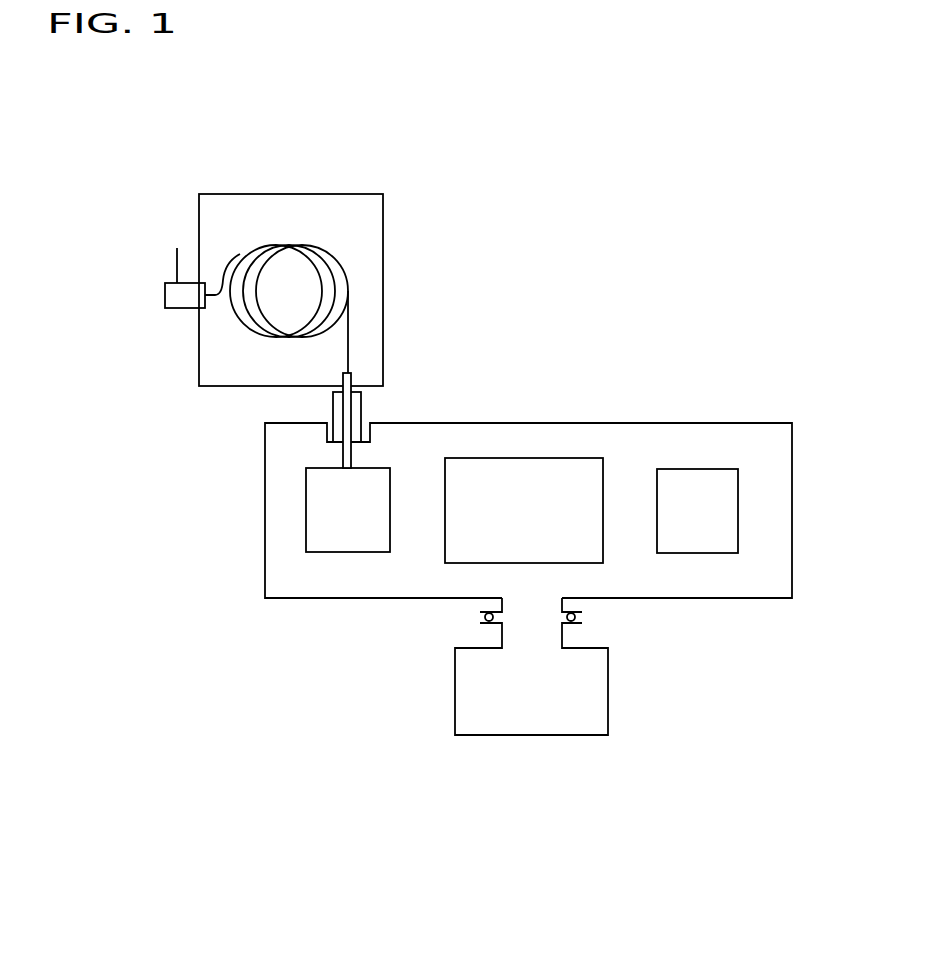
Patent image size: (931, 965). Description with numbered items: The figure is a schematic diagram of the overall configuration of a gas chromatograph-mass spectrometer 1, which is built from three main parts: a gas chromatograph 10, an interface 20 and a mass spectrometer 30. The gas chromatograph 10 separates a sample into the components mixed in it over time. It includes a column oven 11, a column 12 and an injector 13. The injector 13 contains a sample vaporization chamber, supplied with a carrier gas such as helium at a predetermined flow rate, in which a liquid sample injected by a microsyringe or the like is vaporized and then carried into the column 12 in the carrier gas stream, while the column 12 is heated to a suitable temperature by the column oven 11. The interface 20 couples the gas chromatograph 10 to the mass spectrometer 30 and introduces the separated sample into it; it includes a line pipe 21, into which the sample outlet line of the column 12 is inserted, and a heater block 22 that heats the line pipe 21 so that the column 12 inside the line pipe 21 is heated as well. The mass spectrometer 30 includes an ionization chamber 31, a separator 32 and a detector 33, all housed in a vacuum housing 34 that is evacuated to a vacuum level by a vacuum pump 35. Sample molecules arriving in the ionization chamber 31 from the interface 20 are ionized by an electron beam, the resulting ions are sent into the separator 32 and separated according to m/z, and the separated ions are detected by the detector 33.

The gas chromatograph-mass spectrometer 1 is at (520, 909).
The gas chromatograph 10 is at (297, 261).
The column oven 11 is at (282, 193).
The column 12 is at (245, 253).
The injector 13 is at (168, 312).
The interface 20 is at (345, 401).
The line pipe 21 is at (343, 450).
The heater block 22 is at (338, 403).
The mass spectrometer 30 is at (543, 558).
The ionization chamber 31 is at (347, 552).
The separator 32 is at (522, 458).
The detector 33 is at (700, 469).
The vacuum housing 34 is at (685, 598).
The vacuum pump 35 is at (550, 737).